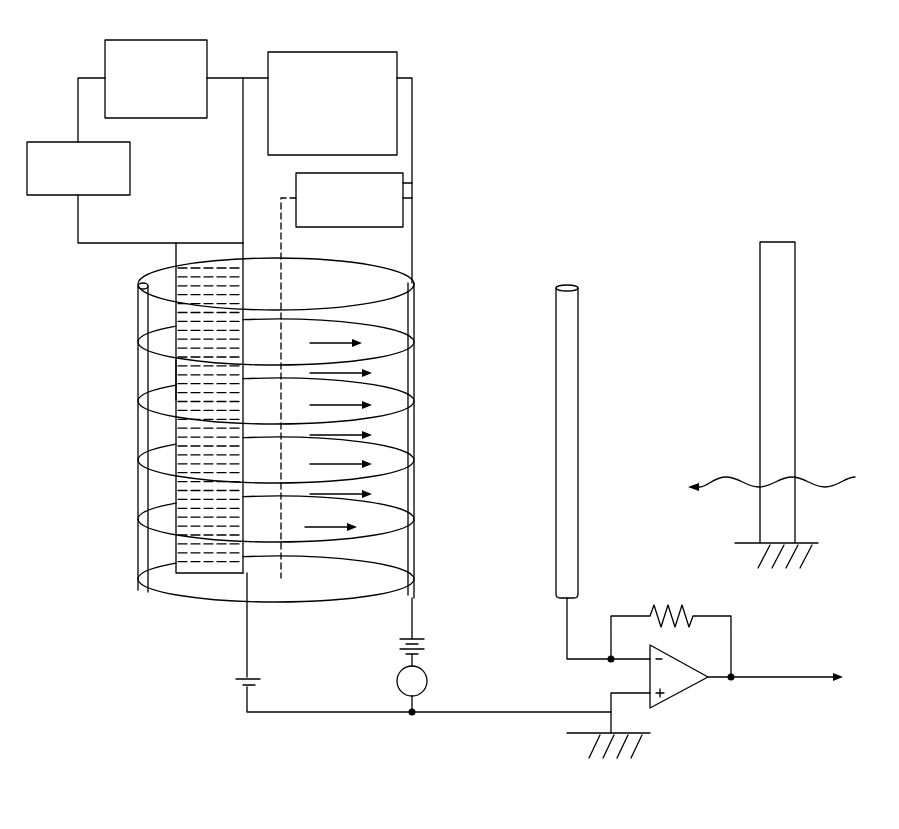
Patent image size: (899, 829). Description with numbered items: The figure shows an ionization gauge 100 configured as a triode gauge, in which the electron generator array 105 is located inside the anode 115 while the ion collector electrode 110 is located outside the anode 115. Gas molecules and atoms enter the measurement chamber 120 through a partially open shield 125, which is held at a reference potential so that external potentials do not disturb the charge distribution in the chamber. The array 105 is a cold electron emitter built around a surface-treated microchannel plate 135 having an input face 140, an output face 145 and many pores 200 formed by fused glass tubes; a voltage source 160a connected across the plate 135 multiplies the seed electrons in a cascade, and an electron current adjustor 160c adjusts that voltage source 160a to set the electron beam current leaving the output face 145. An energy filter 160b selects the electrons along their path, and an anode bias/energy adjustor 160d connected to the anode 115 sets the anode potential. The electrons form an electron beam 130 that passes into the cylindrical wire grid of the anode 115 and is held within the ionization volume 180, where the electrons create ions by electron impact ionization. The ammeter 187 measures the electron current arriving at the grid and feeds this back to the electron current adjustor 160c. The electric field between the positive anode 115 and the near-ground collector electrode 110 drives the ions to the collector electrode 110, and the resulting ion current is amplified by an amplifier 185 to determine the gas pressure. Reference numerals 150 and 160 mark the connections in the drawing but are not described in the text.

The ionization gauge 100 is at (700, 88).
The electron generator array 105 is at (128, 413).
The ion collector electrode 110 is at (578, 405).
The anode 115 is at (412, 282).
The measurement chamber 120 is at (480, 283).
The shield 125 is at (795, 385).
The electron beam 130 is at (330, 532).
The microchannel plate 135 is at (150, 573).
The input face 140 is at (177, 495).
The output face 145 is at (245, 567).
The filament circuit 150 is at (112, 243).
The controller connection 160 is at (242, 196).
The voltage source 160a is at (130, 168).
The energy filter 160b is at (403, 183).
The electron current adjustor 160c is at (131, 40).
The anode bias/energy adjustor 160d is at (365, 52).
The ionization volume 180 is at (304, 280).
The amplifier 185 is at (680, 696).
The ammeter 187 is at (397, 681).
The pores 200 is at (177, 377).